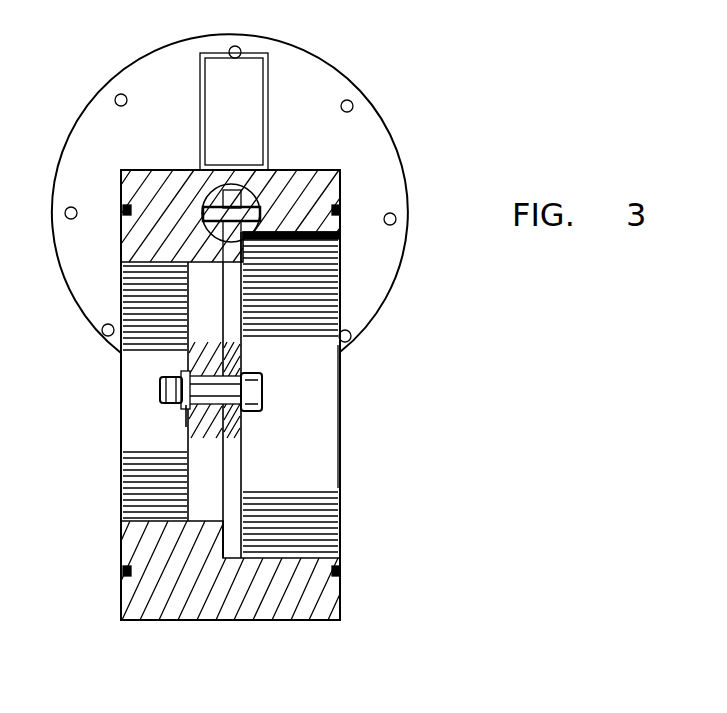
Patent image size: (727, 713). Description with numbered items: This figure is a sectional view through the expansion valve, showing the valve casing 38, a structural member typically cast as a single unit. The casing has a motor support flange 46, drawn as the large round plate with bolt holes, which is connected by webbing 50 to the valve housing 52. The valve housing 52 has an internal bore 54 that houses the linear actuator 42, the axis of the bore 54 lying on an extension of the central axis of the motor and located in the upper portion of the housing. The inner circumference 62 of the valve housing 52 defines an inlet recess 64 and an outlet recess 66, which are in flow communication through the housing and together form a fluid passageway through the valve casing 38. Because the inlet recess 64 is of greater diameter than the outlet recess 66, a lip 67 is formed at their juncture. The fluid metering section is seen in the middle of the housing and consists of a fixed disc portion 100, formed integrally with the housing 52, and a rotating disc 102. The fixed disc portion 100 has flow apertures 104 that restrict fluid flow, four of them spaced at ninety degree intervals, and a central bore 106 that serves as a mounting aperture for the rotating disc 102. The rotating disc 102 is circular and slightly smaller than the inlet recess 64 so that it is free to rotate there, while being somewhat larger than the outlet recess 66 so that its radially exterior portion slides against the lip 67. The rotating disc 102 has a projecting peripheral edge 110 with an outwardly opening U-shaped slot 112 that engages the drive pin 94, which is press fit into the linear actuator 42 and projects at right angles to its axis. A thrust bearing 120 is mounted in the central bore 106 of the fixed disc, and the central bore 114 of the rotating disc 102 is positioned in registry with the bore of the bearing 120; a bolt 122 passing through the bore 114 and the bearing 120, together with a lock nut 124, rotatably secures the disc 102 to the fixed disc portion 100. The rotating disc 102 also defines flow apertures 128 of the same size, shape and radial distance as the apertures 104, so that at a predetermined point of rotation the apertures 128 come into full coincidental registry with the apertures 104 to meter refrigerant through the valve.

The valve casing 38 is at (303, 621).
The linear actuator 42 is at (160, 274).
The motor support flange 46 is at (392, 134).
The webbing 50 is at (247, 131).
The valve housing 52 is at (190, 608).
The internal bore 54 is at (258, 207).
The inner circumference 62 is at (312, 432).
The inlet recess 64 is at (305, 280).
The outlet recess 66 is at (150, 516).
The lip 67 is at (222, 533).
The drive pin 94 is at (300, 200).
The fixed disc portion 100 is at (188, 358).
The rotating disc 102 is at (300, 272).
The flow aperture 104 is at (203, 302).
The central bore 106 is at (188, 408).
The projecting peripheral edge 110 is at (207, 197).
The U-shaped slot 112 is at (240, 190).
The central bore 114 is at (241, 360).
The thrust bearing 120 is at (188, 423).
The bolt 122 is at (263, 393).
The lock nut 124 is at (162, 385).
The flow aperture 128 is at (300, 306).